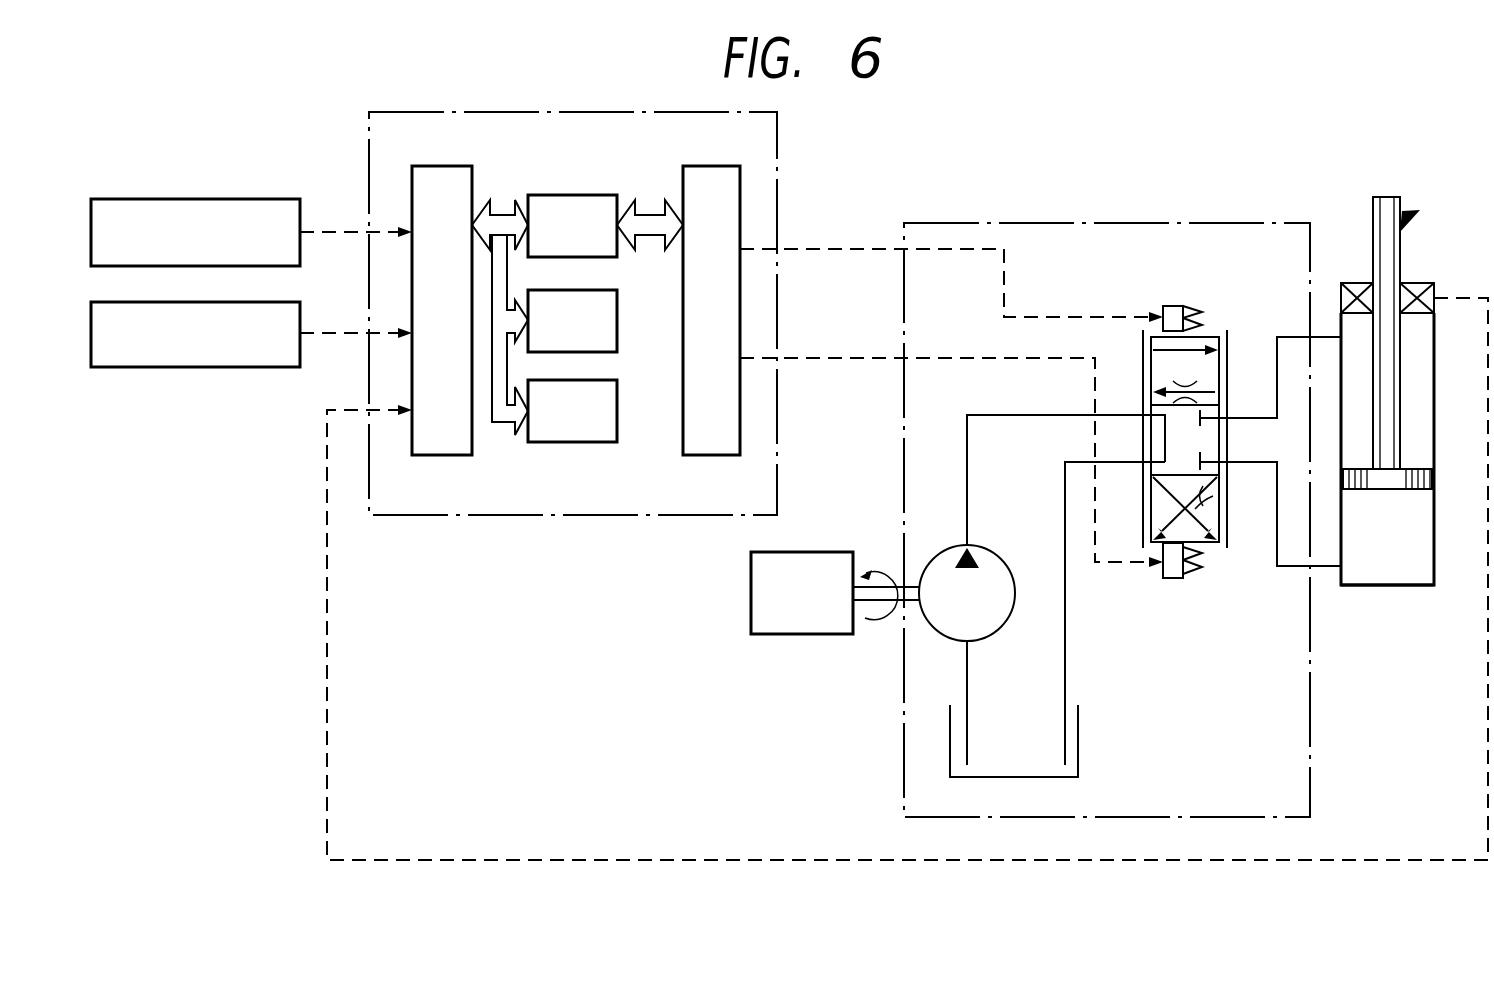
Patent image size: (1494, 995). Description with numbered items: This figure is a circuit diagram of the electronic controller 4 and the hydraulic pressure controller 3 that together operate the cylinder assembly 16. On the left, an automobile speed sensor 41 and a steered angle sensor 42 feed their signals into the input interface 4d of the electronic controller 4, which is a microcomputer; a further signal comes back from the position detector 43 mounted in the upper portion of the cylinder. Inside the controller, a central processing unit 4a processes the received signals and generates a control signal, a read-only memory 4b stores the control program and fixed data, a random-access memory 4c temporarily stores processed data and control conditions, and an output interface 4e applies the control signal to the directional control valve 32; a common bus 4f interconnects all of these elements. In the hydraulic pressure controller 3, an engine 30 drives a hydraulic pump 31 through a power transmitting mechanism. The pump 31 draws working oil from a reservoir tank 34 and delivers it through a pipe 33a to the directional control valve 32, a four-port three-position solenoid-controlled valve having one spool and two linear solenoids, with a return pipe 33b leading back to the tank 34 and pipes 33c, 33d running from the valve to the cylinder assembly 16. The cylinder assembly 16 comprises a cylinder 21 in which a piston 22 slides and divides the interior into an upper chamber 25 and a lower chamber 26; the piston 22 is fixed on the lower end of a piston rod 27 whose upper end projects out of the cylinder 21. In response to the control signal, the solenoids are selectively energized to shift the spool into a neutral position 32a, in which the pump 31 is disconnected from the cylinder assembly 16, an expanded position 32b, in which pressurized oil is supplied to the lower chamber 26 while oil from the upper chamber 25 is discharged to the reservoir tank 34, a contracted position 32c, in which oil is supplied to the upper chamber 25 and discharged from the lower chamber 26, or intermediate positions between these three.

The automobile speed sensor 41 is at (297, 199).
The steered angle sensor 42 is at (298, 302).
The electronic controller 4 is at (607, 112).
The central processing unit 4a is at (582, 195).
The read-only memory 4b is at (617, 313).
The random-access memory 4c is at (618, 397).
The input interface 4d is at (474, 168).
The output interface 4e is at (742, 178).
The common bus 4f is at (498, 215).
The hydraulic pressure controller 3 is at (1163, 223).
The engine 30 is at (812, 636).
The hydraulic pump 31 is at (996, 553).
The directional control valve 32 is at (1222, 331).
The neutral position 32a is at (1208, 447).
The expanded position 32b is at (1208, 540).
The contracted position 32c is at (1208, 377).
The pipe 33a is at (1003, 414).
The pipe 33b is at (1067, 627).
The pipe 33c is at (1292, 336).
The pipe 33d is at (1290, 567).
The reservoir tank 34 is at (1080, 747).
The cylinder assembly 16 is at (1388, 587).
The cylinder 21 is at (1435, 553).
The piston 22 is at (1432, 480).
The upper chamber 25 is at (1423, 390).
The lower chamber 26 is at (1413, 530).
The piston rod 27 is at (1410, 212).
The position detector 43 is at (1435, 290).